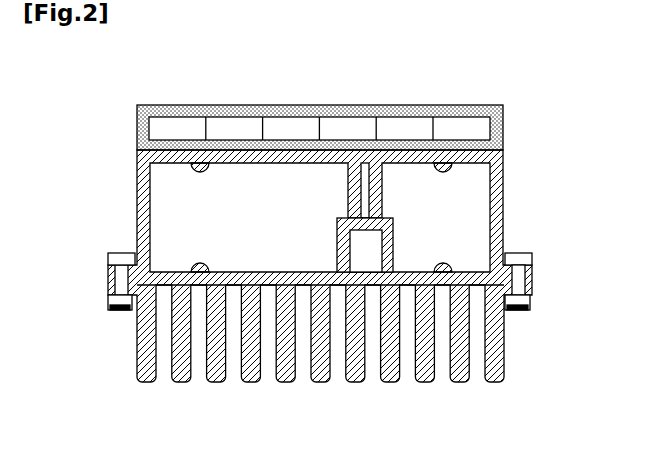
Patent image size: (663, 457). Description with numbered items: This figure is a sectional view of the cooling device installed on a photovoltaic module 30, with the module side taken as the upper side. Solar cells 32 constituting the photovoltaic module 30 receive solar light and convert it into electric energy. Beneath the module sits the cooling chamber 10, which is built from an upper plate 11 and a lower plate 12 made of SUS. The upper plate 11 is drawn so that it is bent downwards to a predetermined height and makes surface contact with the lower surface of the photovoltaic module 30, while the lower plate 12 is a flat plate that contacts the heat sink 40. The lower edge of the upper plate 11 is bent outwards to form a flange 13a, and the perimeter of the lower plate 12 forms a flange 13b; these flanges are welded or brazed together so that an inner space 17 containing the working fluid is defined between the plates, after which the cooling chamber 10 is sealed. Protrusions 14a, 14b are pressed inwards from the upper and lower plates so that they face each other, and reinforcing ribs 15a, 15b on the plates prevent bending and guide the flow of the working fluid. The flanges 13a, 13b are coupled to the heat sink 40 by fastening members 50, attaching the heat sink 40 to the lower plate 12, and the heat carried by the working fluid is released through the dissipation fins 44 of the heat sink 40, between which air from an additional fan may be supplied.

The cooling chamber 10 is at (295, 288).
The upper plate 11 is at (137, 170).
The lower plate 12 is at (137, 242).
The flange 13a is at (532, 268).
The flange 13b is at (530, 298).
The protrusion 14a is at (380, 190).
The protrusion 14b is at (395, 243).
The reinforcing rib 15a is at (198, 162).
The reinforcing rib 15b is at (200, 285).
The inner space 17 is at (480, 186).
The photovoltaic module 30 is at (320, 101).
The solar cells 32 is at (284, 120).
The heat sink 40 is at (412, 383).
The dissipation fins 44 is at (317, 382).
The fastening members 50 is at (108, 258).